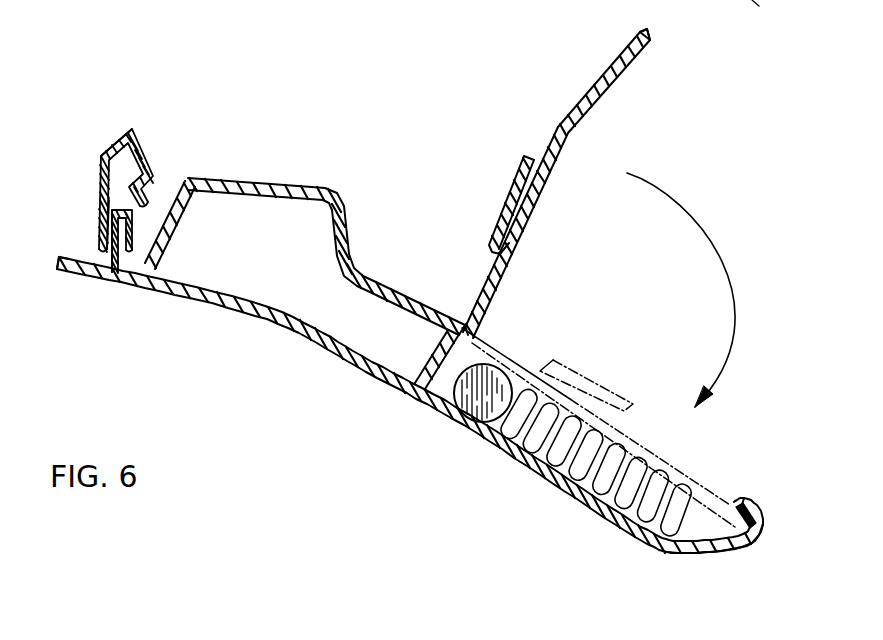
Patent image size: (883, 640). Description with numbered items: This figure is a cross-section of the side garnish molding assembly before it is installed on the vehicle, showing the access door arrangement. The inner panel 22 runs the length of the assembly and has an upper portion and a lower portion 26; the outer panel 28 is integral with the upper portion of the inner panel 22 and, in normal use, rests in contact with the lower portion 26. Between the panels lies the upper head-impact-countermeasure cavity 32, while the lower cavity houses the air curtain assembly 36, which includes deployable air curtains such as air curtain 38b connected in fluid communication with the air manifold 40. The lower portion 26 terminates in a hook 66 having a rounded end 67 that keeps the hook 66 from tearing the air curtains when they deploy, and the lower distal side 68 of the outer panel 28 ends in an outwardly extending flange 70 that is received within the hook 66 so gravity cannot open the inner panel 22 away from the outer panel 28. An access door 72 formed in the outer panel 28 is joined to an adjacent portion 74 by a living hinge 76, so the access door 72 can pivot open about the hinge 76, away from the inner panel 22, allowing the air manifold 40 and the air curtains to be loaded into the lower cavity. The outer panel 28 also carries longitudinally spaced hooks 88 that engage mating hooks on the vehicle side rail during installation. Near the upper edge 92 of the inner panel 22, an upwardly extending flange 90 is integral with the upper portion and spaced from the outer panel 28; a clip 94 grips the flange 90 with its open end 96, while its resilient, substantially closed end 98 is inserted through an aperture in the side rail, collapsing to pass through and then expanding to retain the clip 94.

The inner panel 22 is at (280, 336).
The lower portion 26 is at (758, 542).
The outer panel 28 is at (346, 222).
The head-impact-countermeasure cavity 32 is at (223, 240).
The air curtain assembly 36 is at (607, 494).
The air curtain 38b is at (682, 496).
The air manifold 40 is at (465, 404).
The hook 66 is at (748, 504).
The rounded end 67 is at (735, 506).
The lower distal side 68 is at (651, 46).
The outwardly extending flange 70 is at (634, 33).
The access door 72 is at (600, 82).
The adjacent portion 74 is at (453, 330).
The living hinge 76 is at (462, 330).
The hook 88 is at (503, 196).
The flange 90 is at (110, 213).
The upper edge 92 is at (62, 261).
The clip 94 is at (141, 136).
The open end 96 is at (99, 238).
The closed end 98 is at (103, 158).